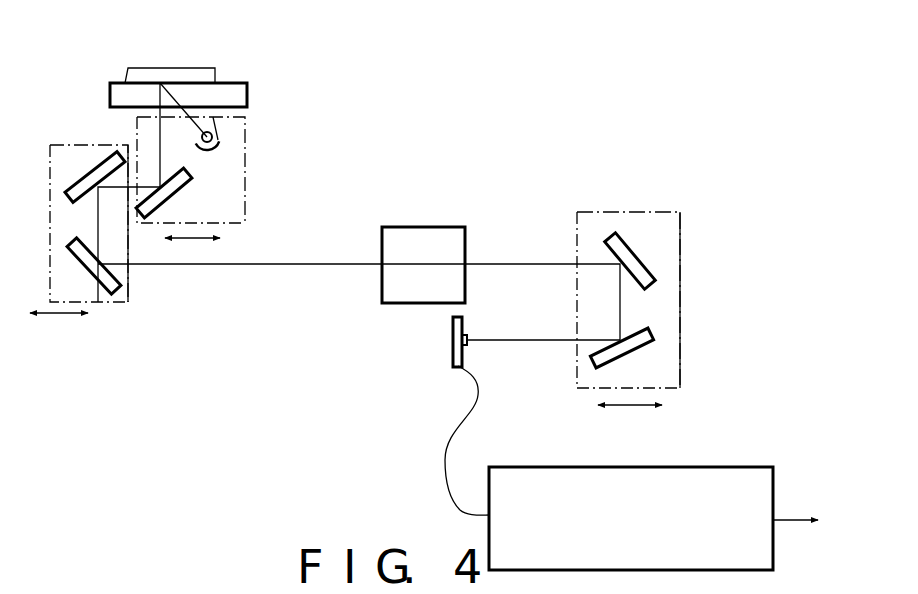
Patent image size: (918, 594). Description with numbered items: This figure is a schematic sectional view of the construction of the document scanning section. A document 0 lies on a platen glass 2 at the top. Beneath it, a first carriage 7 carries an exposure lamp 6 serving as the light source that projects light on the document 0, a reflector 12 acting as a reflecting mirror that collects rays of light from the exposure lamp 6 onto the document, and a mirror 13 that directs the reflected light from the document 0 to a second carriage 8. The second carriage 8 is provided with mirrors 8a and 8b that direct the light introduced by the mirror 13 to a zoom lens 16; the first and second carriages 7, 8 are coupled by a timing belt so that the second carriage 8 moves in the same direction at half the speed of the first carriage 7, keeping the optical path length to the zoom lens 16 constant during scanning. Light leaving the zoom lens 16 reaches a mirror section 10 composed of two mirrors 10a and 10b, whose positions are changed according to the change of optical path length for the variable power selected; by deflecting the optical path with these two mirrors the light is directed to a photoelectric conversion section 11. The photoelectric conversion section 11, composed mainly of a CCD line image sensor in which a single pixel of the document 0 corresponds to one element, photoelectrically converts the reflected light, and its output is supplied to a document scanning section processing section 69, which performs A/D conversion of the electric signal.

The document 0 is at (183, 68).
The platen glass 2 is at (230, 83).
The first carriage 7 is at (247, 123).
The reflector 12 is at (218, 140).
The exposure lamp 6 is at (215, 145).
The mirror 13 is at (185, 192).
The second carriage 8 is at (130, 272).
The mirror 8a is at (82, 177).
The mirror 8b is at (98, 298).
The zoom lens 16 is at (413, 226).
The photoelectric conversion section 11 is at (465, 325).
The mirror section 10 is at (683, 288).
The mirror 10a is at (638, 260).
The mirror 10b is at (657, 328).
The document scanning section processing section 69 is at (708, 467).